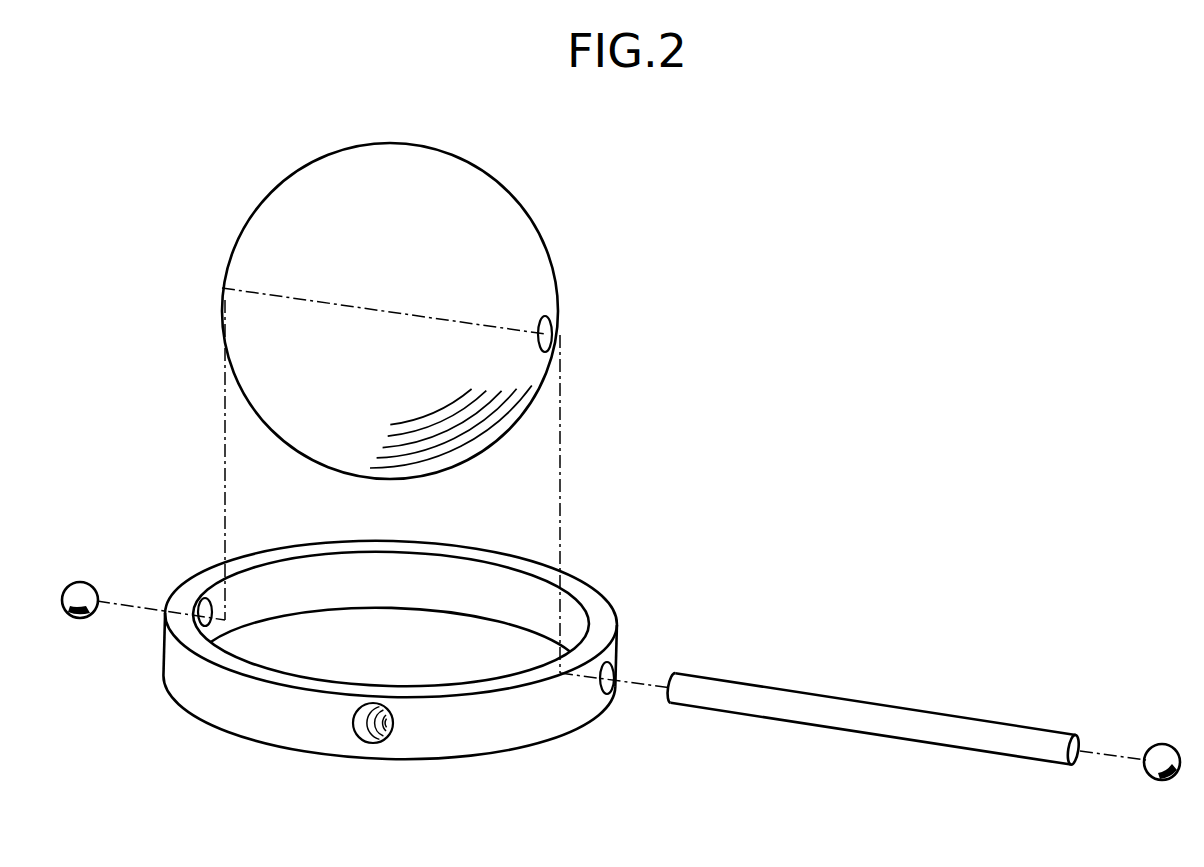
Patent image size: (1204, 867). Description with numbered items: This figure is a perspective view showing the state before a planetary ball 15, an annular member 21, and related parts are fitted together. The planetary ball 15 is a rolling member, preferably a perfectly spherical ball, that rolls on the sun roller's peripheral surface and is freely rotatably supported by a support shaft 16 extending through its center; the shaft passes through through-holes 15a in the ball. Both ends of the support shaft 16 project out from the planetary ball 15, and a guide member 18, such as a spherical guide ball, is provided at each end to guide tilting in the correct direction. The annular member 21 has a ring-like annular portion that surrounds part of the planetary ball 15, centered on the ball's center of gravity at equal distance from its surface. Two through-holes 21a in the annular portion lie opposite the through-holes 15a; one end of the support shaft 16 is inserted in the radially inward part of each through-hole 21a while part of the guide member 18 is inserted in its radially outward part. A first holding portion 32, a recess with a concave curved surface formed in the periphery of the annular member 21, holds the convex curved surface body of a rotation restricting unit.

The planetary ball 15 is at (493, 200).
The through-hole 15a is at (556, 333).
The support shaft 16 is at (977, 718).
The guide member 18 is at (91, 590).
The annular member 21 is at (594, 608).
The through-hole 21a is at (207, 605).
The first holding portion 32 is at (383, 727).